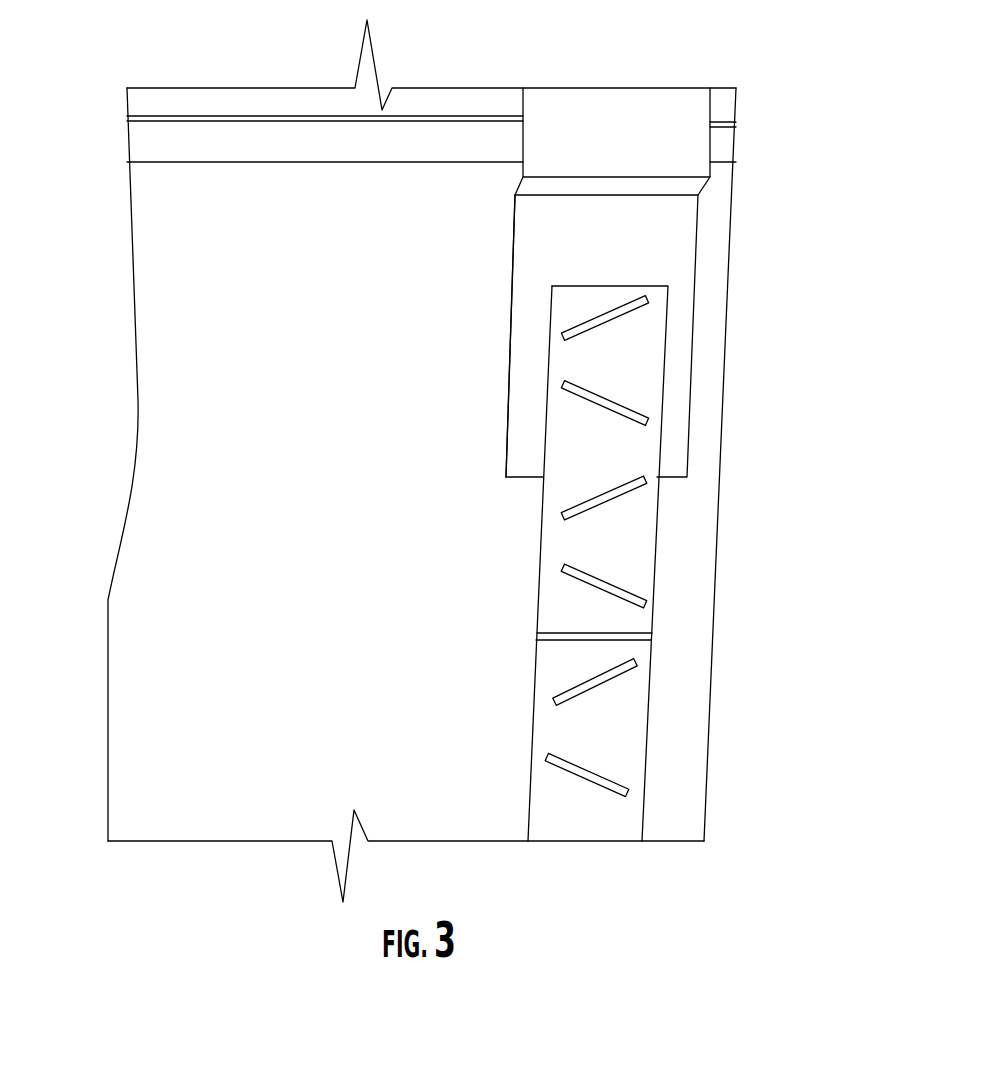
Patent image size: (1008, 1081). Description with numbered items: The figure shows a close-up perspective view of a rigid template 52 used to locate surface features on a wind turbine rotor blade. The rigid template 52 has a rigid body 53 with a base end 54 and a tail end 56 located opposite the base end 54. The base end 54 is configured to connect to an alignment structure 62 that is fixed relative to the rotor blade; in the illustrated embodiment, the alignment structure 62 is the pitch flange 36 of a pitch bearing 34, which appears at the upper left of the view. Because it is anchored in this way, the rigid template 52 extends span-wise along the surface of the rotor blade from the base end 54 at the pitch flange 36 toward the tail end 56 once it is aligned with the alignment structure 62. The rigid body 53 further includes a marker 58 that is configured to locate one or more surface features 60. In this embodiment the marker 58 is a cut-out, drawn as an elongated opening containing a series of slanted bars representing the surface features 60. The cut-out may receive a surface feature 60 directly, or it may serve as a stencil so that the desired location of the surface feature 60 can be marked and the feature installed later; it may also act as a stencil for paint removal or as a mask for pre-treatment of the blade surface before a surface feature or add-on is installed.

The pitch bearing 34 is at (178, 138).
The pitch flange 36 is at (208, 162).
The rigid template 52 is at (698, 258).
The rigid body 53 is at (514, 250).
The base end 54 is at (567, 127).
The tail end 56 is at (533, 372).
The marker 58 is at (667, 360).
The surface feature 60 is at (658, 587).
The alignment structure 62 is at (737, 122).